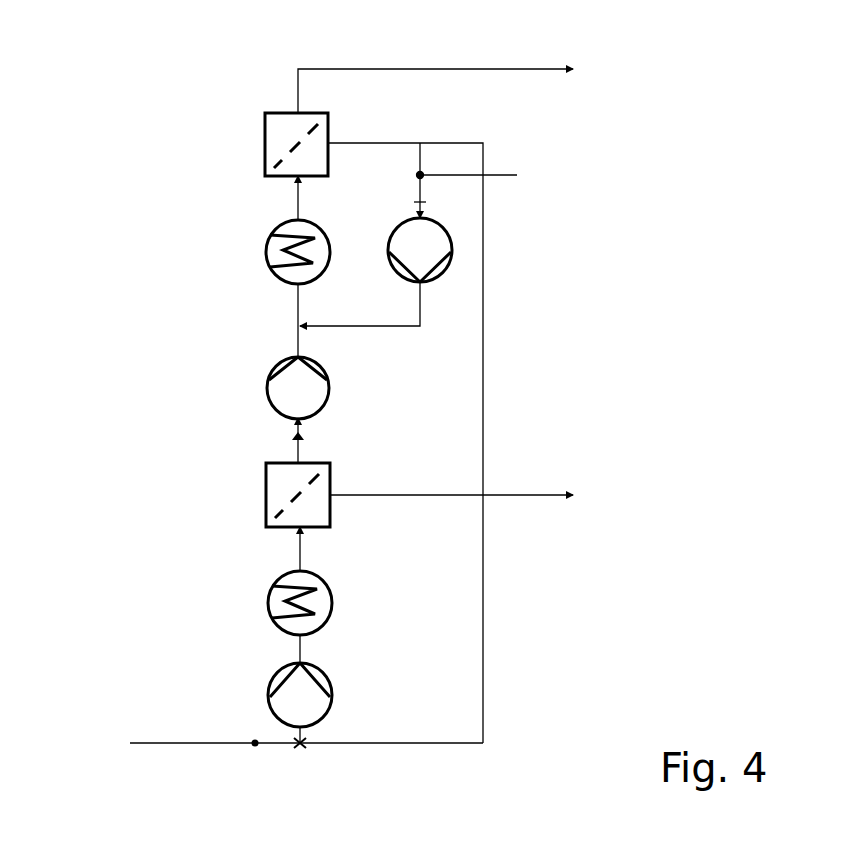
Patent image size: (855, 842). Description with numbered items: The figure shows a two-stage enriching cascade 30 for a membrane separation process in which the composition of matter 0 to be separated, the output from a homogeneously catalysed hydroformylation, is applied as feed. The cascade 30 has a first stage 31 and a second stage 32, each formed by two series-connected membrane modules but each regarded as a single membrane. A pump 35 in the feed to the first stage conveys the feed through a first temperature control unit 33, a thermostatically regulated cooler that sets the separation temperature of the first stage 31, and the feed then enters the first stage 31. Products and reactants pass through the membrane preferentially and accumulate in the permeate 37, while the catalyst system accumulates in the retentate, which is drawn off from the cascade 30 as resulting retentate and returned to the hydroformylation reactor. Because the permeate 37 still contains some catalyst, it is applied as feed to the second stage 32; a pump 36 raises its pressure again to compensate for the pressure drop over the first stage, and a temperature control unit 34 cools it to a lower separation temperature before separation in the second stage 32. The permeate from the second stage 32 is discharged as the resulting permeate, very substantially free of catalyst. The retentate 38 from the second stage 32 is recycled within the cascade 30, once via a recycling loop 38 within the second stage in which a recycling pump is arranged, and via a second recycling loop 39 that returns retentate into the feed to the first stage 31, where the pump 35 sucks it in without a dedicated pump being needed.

The two-stage enriching cascade 30 is at (127, 72).
The first stage 31 is at (270, 510).
The second stage 32 is at (267, 160).
The first temperature control unit 33 is at (268, 602).
The temperature control unit 34 is at (267, 252).
The pump 35 is at (282, 705).
The pump 36 is at (273, 372).
The permeate 37 is at (298, 447).
The retentate / recycling loop 38 is at (517, 175).
The second recycling loop 39 is at (483, 235).
The composition of matter 0 is at (255, 743).